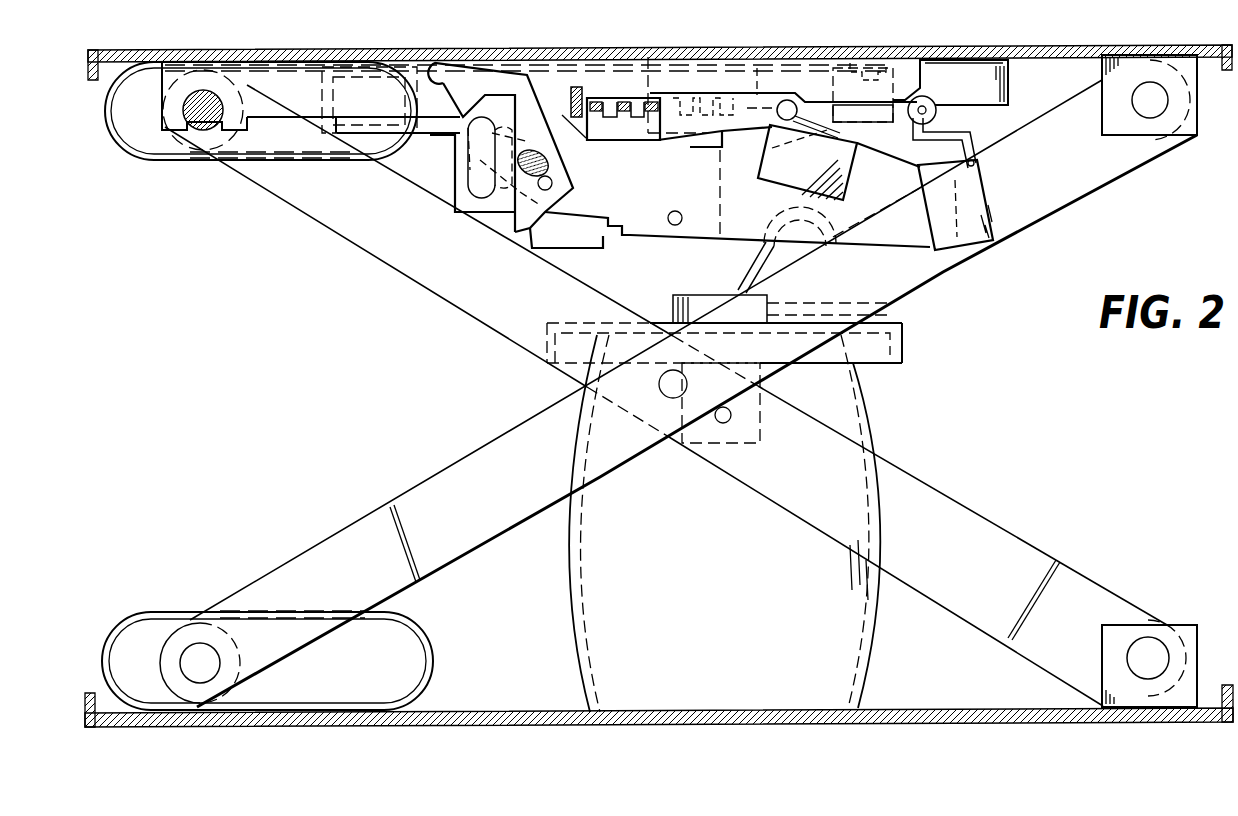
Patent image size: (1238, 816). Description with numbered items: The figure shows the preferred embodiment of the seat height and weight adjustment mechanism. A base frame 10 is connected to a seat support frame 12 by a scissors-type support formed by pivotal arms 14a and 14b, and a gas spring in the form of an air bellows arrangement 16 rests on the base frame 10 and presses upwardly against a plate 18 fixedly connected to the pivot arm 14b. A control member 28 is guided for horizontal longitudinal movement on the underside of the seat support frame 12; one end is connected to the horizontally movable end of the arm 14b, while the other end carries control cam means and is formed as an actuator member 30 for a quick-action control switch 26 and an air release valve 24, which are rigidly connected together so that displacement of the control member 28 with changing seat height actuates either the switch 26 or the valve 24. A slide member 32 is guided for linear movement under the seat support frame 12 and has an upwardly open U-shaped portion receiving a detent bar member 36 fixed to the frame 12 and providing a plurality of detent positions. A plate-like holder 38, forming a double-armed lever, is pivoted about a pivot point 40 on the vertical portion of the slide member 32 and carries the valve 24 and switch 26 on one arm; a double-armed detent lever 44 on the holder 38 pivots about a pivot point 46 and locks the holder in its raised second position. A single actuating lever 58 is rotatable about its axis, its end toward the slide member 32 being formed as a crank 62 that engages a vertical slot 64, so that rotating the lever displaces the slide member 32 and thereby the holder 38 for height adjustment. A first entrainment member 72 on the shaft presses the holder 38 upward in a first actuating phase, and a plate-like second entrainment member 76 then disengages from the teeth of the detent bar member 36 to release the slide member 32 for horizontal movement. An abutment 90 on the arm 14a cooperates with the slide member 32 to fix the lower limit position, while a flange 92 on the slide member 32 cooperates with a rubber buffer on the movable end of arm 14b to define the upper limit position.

The base frame 10 is at (928, 712).
The seat support frame 12 is at (972, 45).
The pivotal arm 14a is at (424, 497).
The pivotal arm 14b is at (965, 517).
The air bellows arrangement 16 is at (700, 562).
The plate 18 is at (902, 345).
The air release valve 24 is at (968, 197).
The control switch 26 is at (842, 152).
The control member 28 is at (282, 76).
The actuator member 30 is at (846, 80).
The slide member 32 is at (452, 198).
The detent bar member 36 is at (682, 103).
The holder 38 is at (730, 226).
The pivot point 40 is at (672, 226).
The detent lever 44 is at (477, 72).
The pivot point 46 is at (548, 191).
The actuating lever 58 is at (550, 158).
The crank 62 is at (480, 138).
The vertical slot 64 is at (488, 198).
The first entrainment member 72 is at (574, 86).
The second entrainment member 76 is at (623, 118).
The abutment 90 is at (752, 271).
The flange 92 is at (321, 83).